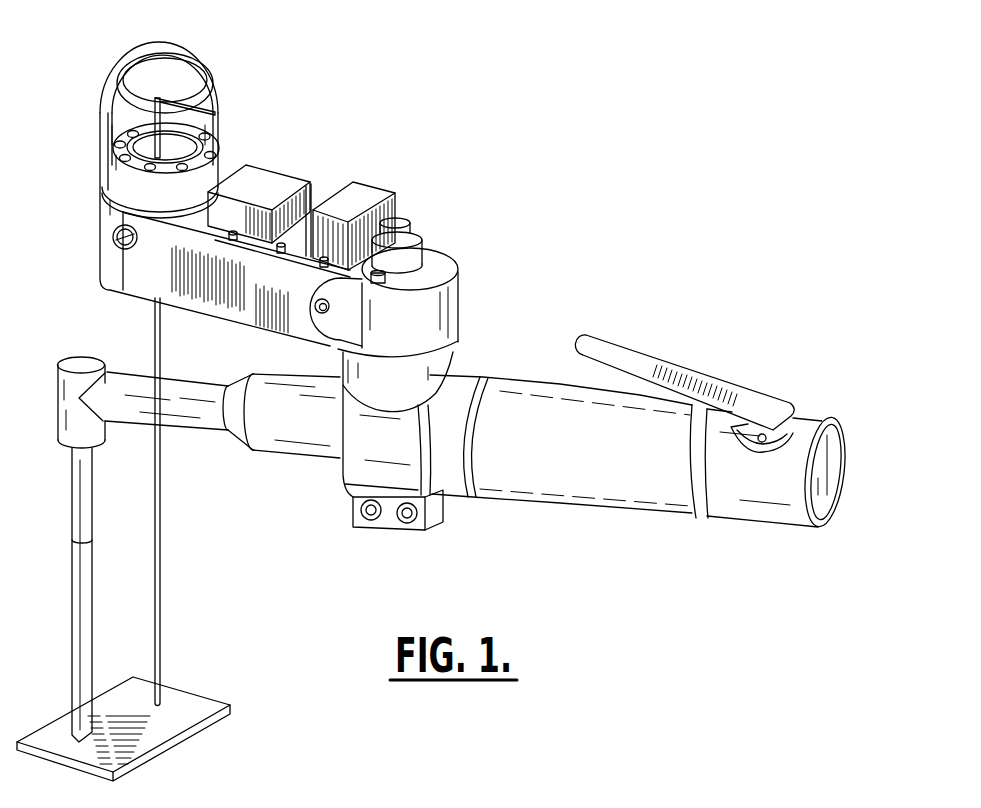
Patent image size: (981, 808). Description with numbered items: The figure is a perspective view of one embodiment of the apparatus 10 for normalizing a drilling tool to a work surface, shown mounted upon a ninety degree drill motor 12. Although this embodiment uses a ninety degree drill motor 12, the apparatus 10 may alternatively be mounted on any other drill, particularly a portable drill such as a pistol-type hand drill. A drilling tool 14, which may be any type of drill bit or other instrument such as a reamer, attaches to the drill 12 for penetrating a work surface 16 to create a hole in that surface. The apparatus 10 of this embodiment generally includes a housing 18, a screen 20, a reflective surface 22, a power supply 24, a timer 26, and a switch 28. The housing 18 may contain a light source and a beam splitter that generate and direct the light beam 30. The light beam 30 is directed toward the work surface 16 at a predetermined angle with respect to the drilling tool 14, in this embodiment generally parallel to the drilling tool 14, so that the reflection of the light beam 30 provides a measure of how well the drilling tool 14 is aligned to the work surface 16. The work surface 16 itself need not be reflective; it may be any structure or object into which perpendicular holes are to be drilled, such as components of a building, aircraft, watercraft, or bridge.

The apparatus 10 is at (522, 292).
The drill motor 12 is at (537, 503).
The drilling tool 14 is at (72, 577).
The work surface 16 is at (213, 698).
The housing 18 is at (112, 292).
The screen 20 is at (176, 148).
The reflective surface 22 is at (150, 78).
The power supply 24 is at (281, 171).
The timer 26 is at (389, 187).
The switch 28 is at (379, 267).
The light beam 30 is at (163, 622).